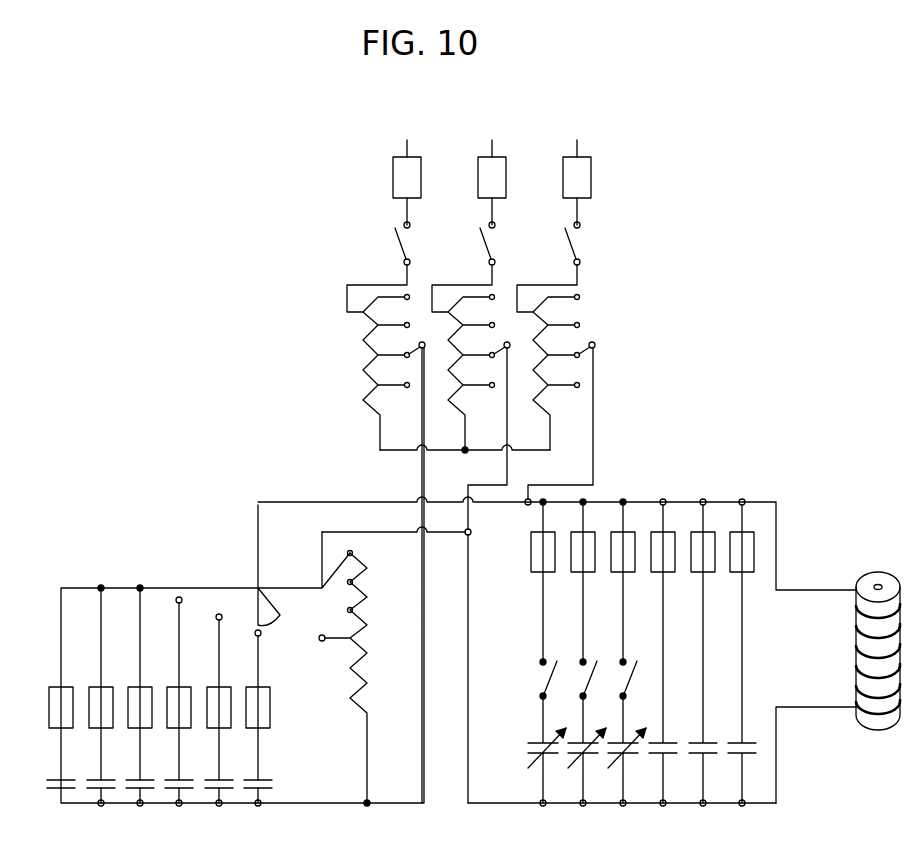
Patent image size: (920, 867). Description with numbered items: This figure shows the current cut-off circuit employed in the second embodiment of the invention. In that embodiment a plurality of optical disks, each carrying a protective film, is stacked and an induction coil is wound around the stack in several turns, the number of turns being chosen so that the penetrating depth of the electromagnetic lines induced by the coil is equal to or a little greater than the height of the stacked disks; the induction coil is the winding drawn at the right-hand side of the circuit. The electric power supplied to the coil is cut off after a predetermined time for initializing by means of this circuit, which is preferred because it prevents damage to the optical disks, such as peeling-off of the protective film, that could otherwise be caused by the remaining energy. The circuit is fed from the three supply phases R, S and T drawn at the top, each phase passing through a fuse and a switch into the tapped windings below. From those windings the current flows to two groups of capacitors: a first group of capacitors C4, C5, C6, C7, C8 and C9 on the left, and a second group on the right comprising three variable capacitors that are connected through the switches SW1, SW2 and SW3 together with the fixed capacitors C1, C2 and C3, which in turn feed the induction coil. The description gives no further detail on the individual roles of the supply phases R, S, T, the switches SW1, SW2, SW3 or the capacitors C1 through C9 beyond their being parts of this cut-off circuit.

The phase R supply line with fuse, switch and tapped inductor R is at (386, 459).
The phase S supply line with fuse, switch and tapped inductor S is at (471, 459).
The phase T supply line with fuse, switch and tapped inductor T is at (556, 310).
The switch for variable capacitor branch 1 SW1 is at (537, 652).
The switch for variable capacitor branch 2 SW2 is at (579, 652).
The switch for variable capacitor branch 3 SW3 is at (619, 652).
The capacitor C1 is at (657, 652).
The capacitor C2 is at (695, 652).
The capacitor C3 is at (734, 652).
The capacitor C4 is at (70, 737).
The capacitor C5 is at (110, 695).
The capacitor C6 is at (151, 695).
The capacitor C7 is at (190, 701).
The capacitor C8 is at (229, 710).
The capacitor C9 is at (269, 721).